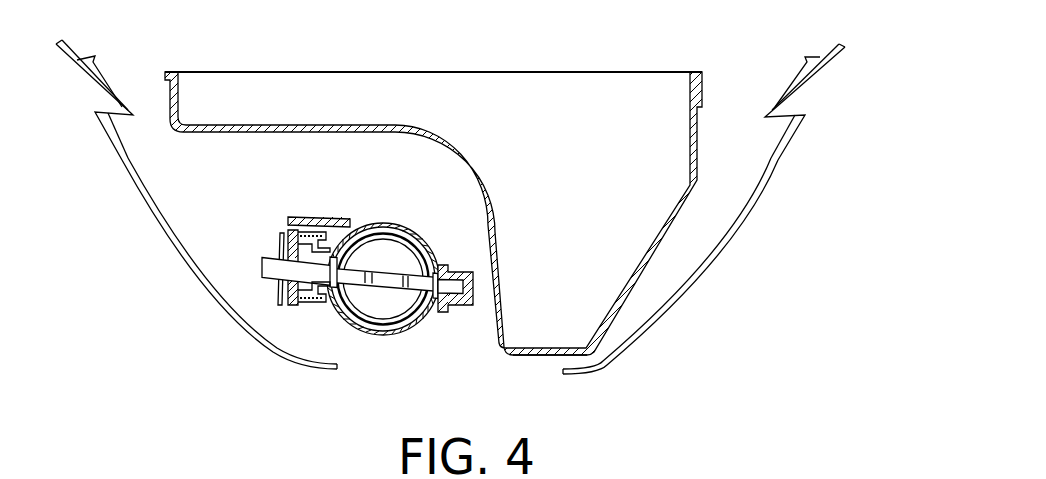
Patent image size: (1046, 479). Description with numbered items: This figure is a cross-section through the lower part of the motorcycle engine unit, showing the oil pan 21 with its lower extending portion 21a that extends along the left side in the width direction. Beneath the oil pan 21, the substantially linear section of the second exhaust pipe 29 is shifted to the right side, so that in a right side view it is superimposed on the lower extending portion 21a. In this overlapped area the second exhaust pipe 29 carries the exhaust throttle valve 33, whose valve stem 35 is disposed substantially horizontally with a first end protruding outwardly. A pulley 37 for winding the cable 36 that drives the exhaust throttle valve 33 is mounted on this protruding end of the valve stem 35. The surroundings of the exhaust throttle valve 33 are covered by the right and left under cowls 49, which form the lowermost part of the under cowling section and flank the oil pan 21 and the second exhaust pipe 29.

The oil pan 21 is at (704, 80).
The lower extending portion 21a is at (525, 357).
The second exhaust pipe 29 is at (388, 337).
The exhaust throttle valve 33 is at (400, 226).
The valve stem 35 is at (268, 255).
The cable 36 is at (302, 308).
The pulley 37 is at (336, 218).
The under cowl 49 is at (722, 253).